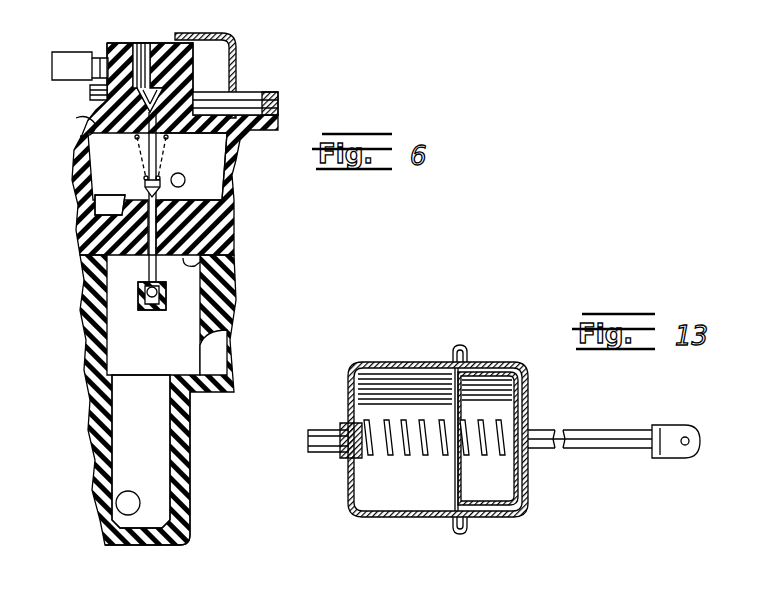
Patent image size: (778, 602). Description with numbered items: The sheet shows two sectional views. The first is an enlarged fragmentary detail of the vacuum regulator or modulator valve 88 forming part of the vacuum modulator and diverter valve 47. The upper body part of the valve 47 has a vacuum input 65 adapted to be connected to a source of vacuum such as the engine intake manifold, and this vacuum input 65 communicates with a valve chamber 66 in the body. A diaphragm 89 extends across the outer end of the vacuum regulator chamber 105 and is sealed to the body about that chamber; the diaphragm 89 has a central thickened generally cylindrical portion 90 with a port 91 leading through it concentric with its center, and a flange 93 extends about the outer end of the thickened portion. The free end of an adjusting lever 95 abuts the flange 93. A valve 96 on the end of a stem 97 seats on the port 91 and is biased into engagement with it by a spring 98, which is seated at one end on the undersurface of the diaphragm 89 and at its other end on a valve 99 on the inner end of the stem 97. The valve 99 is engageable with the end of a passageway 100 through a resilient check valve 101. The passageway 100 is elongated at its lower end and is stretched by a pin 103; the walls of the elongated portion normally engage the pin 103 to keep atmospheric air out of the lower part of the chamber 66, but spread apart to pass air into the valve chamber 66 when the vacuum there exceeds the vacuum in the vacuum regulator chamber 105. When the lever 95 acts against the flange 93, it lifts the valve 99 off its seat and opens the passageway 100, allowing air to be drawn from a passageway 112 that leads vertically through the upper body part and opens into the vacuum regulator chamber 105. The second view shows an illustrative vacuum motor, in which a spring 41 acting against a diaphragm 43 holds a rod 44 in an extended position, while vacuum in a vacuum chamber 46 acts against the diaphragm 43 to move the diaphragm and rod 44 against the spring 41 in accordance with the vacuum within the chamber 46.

In FIG. 6, the adjusting lever 95 is at (78, 60).
In FIG. 6, the flange 93 is at (115, 50).
In FIG. 6, the valve 96 is at (152, 100).
In FIG. 6, the central thickened cylindrical portion 90 is at (208, 111).
In FIG. 6, the vacuum regulator valve 88 is at (230, 106).
In FIG. 6, the port 91 is at (107, 98).
In FIG. 6, the diaphragm 89 is at (78, 120).
In FIG. 6, the stem 97 is at (85, 148).
In FIG. 6, the spring 98 is at (140, 160).
In FIG. 6, the valve 99 is at (145, 183).
In FIG. 6, the passageway 112 is at (188, 168).
In FIG. 6, the vacuum regulator chamber 105 is at (205, 180).
In FIG. 6, the check valve 101 is at (200, 260).
In FIG. 6, the passageway 100 is at (153, 277).
In FIG. 6, the pin 103 is at (140, 298).
In FIG. 6, the vacuum modulator and diverter valve 47 is at (201, 426).
In FIG. 6, the valve chamber 66 is at (152, 467).
In FIG. 6, the vacuum input 65 is at (120, 505).
In FIG. 13, the vacuum chamber 46 is at (380, 500).
In FIG. 13, the diaphragm 43 is at (512, 505).
In FIG. 13, the spring 41 is at (455, 456).
In FIG. 13, the rod 44 is at (616, 432).